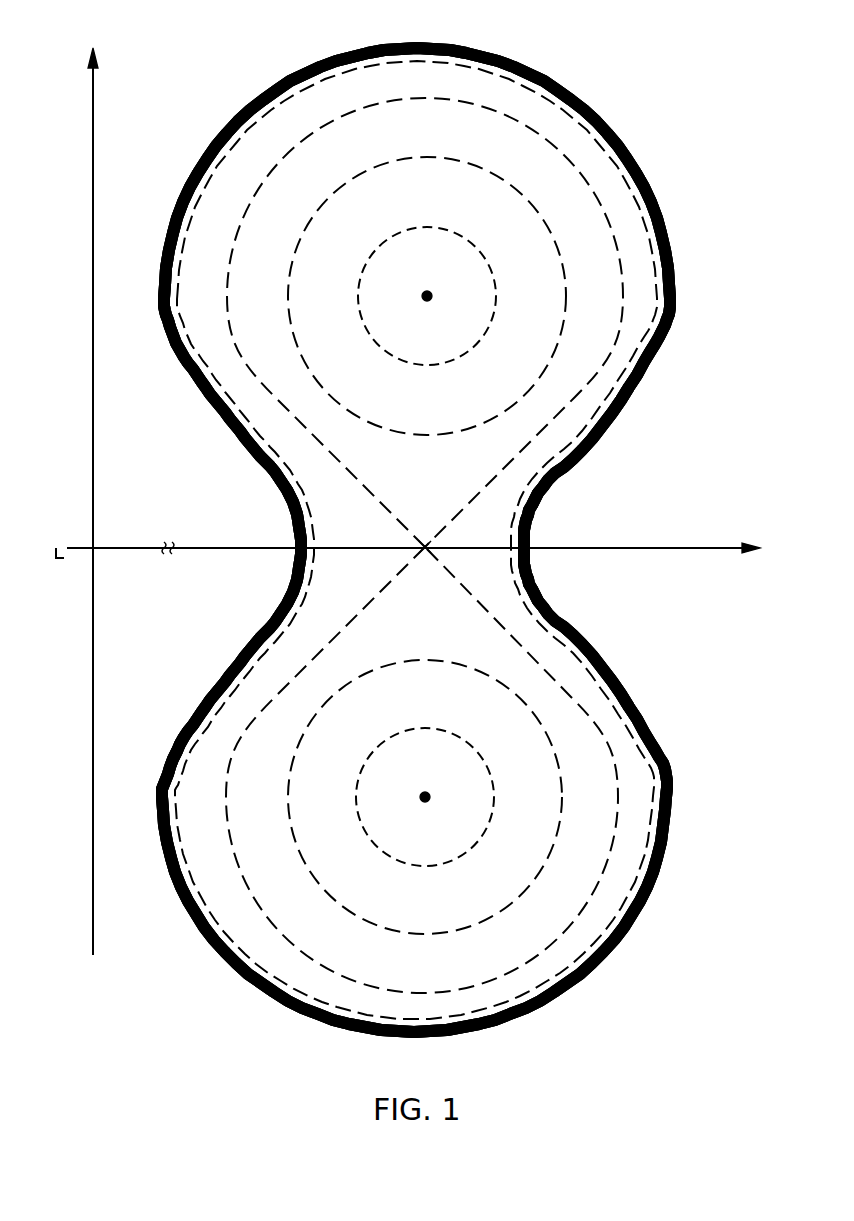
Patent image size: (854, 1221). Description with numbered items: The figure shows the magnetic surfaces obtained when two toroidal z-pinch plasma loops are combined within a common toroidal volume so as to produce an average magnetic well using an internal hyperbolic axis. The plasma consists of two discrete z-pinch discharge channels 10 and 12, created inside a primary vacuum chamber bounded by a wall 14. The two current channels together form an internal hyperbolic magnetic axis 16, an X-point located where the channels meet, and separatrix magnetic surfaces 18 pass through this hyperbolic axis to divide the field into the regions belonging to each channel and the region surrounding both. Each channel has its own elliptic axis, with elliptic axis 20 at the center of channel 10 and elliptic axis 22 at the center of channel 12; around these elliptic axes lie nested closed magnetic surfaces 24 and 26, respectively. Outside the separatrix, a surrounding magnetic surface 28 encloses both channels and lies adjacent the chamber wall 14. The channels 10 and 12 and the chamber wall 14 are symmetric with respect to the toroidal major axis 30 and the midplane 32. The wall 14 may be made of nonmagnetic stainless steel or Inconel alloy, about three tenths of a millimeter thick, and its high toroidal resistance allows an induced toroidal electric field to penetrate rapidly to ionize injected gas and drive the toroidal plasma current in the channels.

The z-pinch discharge channel 10 is at (526, 251).
The z-pinch discharge channel 12 is at (494, 899).
The chamber wall 14 is at (618, 137).
The internal hyperbolic magnetic axis 16 is at (425, 547).
The separatrix magnetic surfaces 18 is at (235, 304).
The elliptic axis 20 is at (428, 295).
The elliptic axis 22 is at (426, 796).
The nested closed magnetic surfaces 24 is at (303, 332).
The nested closed magnetic surfaces 26 is at (297, 799).
The surrounding magnetic surface 28 is at (666, 214).
The toroidal major axis 30 is at (92, 330).
The midplane 32 is at (691, 547).